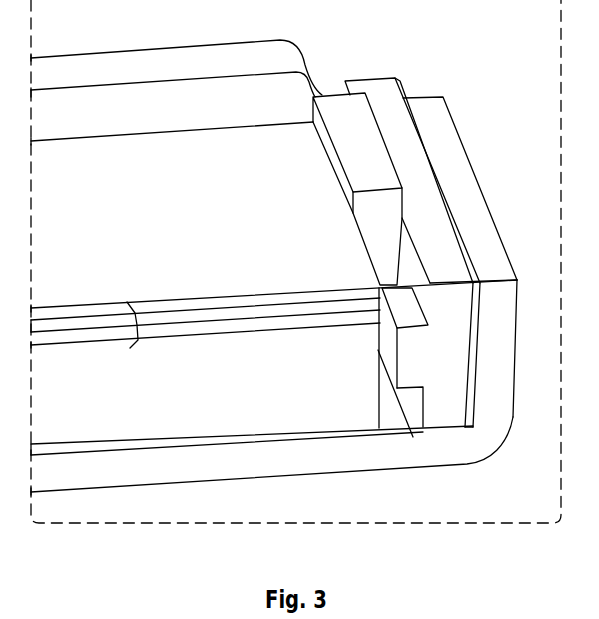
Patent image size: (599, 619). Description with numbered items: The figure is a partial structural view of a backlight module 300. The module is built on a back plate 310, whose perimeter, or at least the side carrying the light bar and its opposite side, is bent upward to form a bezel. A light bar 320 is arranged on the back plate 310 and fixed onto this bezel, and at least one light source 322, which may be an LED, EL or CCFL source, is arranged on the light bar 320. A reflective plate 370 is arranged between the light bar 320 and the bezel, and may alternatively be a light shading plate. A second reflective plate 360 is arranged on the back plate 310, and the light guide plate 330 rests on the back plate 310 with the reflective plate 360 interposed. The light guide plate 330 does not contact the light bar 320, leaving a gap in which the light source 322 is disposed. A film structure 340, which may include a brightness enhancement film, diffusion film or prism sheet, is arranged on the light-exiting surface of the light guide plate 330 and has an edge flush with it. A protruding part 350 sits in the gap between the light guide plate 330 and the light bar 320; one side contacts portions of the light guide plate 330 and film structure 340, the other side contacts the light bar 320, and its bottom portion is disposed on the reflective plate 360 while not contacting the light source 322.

The backlight module 300 is at (540, 34).
The back plate 310 is at (455, 172).
The light bar 320 is at (383, 93).
The light source 322 is at (407, 347).
The light guide plate 330 is at (278, 400).
The film structure 340 is at (138, 325).
The protruding part 350 is at (350, 118).
The reflective plate 360 is at (380, 407).
The reflective plate 370 is at (460, 240).